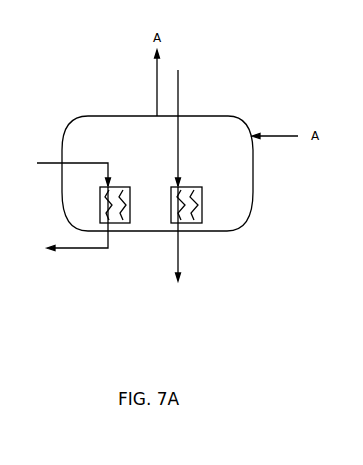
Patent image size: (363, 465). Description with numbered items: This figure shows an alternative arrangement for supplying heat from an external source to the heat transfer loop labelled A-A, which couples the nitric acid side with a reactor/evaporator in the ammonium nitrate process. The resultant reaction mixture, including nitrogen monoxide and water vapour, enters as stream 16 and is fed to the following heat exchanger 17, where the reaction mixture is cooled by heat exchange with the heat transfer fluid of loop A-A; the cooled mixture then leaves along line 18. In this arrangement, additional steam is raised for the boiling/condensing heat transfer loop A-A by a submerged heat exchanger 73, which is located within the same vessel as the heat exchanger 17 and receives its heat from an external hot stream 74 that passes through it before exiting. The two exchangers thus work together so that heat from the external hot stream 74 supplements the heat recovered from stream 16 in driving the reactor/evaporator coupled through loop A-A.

The stream 16 is at (182, 98).
The heat exchanger 17 is at (205, 197).
The outlet line 18 is at (180, 263).
The submerged heat exchanger 73 is at (98, 212).
The external hot stream 74 is at (51, 160).